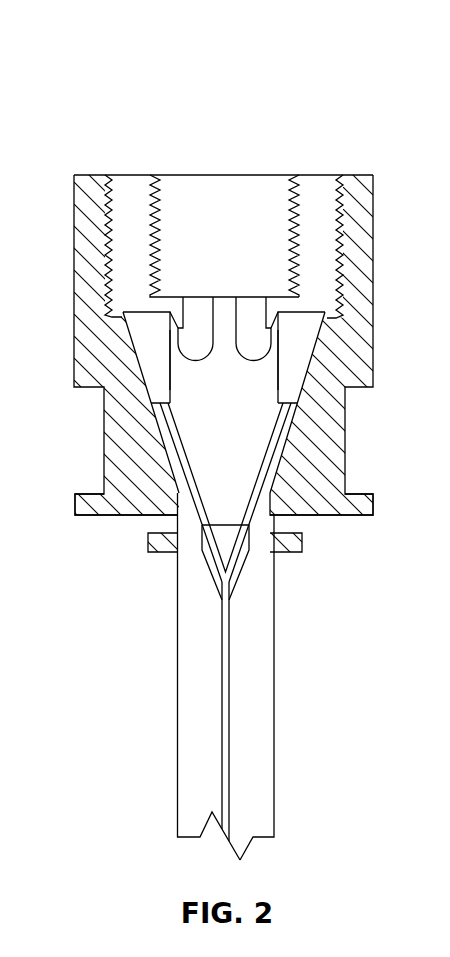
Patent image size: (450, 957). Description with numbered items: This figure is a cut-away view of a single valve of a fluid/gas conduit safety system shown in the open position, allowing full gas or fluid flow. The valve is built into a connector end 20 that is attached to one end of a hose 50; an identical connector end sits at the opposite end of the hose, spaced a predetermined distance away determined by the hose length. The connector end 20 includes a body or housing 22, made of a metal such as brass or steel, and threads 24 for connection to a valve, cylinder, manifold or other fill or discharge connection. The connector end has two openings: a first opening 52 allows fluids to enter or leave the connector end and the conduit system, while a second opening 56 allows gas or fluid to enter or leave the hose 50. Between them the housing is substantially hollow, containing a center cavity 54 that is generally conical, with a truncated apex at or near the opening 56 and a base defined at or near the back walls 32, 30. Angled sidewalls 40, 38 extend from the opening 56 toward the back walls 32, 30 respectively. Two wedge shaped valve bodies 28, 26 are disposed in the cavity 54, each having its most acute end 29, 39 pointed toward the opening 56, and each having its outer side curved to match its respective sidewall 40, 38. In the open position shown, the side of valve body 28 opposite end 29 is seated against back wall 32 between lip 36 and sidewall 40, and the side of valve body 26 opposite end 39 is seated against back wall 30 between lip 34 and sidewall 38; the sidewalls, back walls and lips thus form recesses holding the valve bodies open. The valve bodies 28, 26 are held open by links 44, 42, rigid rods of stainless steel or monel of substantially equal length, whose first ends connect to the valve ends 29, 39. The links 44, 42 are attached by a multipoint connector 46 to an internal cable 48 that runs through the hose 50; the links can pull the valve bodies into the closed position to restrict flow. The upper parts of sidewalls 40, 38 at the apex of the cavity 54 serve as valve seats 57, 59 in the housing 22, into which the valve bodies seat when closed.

The connector end 20 is at (76, 78).
The housing 22 is at (376, 194).
The threads 24 is at (298, 195).
The wedge shaped valve body 26 is at (345, 311).
The wedge shaped valve body 28 is at (123, 311).
The valve end 29 is at (152, 403).
The back wall 30 is at (335, 300).
The back wall 32 is at (145, 306).
The lip 34 is at (237, 300).
The lip 36 is at (212, 300).
The angled sidewall 38 is at (315, 353).
The valve end 39 is at (343, 410).
The angled sidewall 40 is at (132, 350).
The link 42 is at (248, 510).
The link 44 is at (165, 553).
The multipoint connector 46 is at (232, 590).
The internal cable 48 is at (222, 768).
The hose 50 is at (275, 770).
The first opening 52 is at (222, 175).
The center cavity 54 is at (225, 422).
The second opening 56 is at (258, 540).
The valve seat 57 is at (138, 515).
The valve seat 59 is at (300, 493).